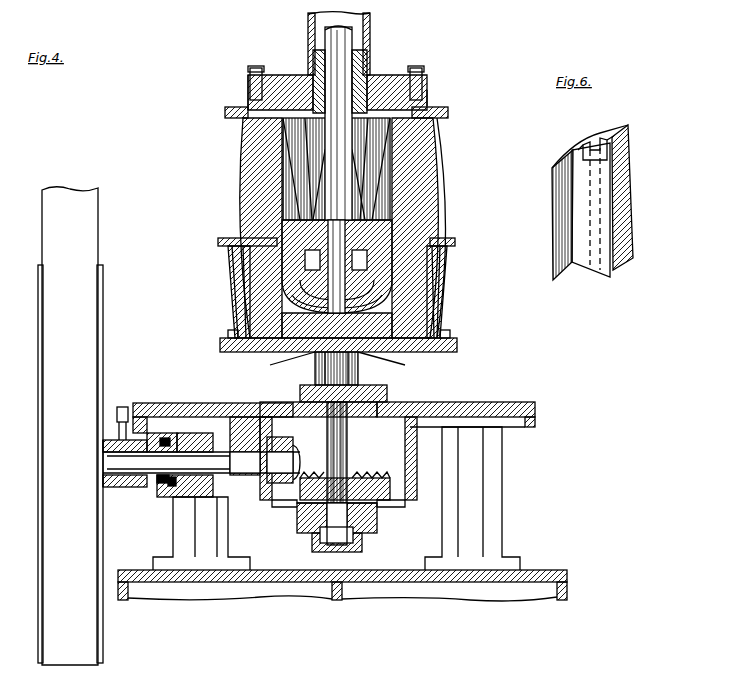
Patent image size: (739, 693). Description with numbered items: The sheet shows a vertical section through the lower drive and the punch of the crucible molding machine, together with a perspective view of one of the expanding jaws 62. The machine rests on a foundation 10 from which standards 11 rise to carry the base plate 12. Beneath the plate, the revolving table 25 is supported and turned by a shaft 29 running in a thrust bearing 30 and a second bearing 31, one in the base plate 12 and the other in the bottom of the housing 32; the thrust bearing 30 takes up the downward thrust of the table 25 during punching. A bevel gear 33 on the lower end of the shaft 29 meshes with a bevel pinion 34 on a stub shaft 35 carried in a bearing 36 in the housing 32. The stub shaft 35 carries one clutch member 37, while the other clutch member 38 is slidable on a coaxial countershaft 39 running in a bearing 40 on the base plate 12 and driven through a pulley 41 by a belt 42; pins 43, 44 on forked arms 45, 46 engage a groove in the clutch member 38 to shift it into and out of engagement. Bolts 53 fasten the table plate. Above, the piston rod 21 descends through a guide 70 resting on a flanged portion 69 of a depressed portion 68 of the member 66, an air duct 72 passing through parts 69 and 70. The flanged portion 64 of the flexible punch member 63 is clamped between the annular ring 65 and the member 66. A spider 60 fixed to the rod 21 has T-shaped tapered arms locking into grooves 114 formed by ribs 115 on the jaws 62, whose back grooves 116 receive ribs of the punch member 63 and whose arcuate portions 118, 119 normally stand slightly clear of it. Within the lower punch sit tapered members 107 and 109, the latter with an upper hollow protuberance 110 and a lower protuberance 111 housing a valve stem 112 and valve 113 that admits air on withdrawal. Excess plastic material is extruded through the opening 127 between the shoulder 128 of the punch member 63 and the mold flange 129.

In FIG. 4, the foundation 10 is at (402, 584).
In FIG. 4, the standards 11 is at (230, 537).
In FIG. 4, the base plate 12 is at (535, 420).
In FIG. 4, the piston rod 21 is at (346, 40).
In FIG. 4, the revolving table 25 is at (430, 352).
In FIG. 4, the shaft 29 is at (347, 443).
In FIG. 4, the thrust bearing 30 is at (387, 394).
In FIG. 4, the bearing 31 is at (353, 540).
In FIG. 4, the housing 32 is at (403, 505).
In FIG. 4, the bevel gear 33 is at (312, 548).
In FIG. 4, the bevel pinion 34 is at (293, 532).
In FIG. 4, the stub shaft 35 is at (240, 417).
In FIG. 4, the bearing 36 is at (270, 437).
In FIG. 4, the clutch member 37 is at (205, 403).
In FIG. 4, the clutch member 38 is at (190, 433).
In FIG. 4, the countershaft 39 is at (125, 407).
In FIG. 4, the bearing 40 is at (118, 487).
In FIG. 4, the driving pulley 41 is at (103, 325).
In FIG. 4, the belt 42 is at (88, 251).
In FIG. 4, the pin 43 is at (160, 433).
In FIG. 4, the pin 44 is at (160, 483).
In FIG. 4, the forked arm 45 is at (167, 438).
In FIG. 4, the forked arm 46 is at (172, 486).
In FIG. 4, the bolts 53 is at (228, 334).
In FIG. 4, the spider 60 is at (240, 137).
In FIG. 6, the jaws 62 is at (597, 198).
In FIG. 4, the punch member 63 is at (448, 177).
In FIG. 4, the flanged portion 64 is at (248, 80).
In FIG. 4, the annular ring 65 is at (240, 112).
In FIG. 4, the member 66 is at (256, 66).
In FIG. 4, the depressed portion 68 is at (300, 80).
In FIG. 4, the flanged portion 69 is at (310, 65).
In FIG. 4, the guide 70 is at (367, 62).
In FIG. 4, the air duct 72 is at (375, 105).
In FIG. 4, the tapered member 107 is at (437, 217).
In FIG. 4, the tapered member 109 is at (430, 273).
In FIG. 4, the hollow protuberance 110 is at (240, 240).
In FIG. 4, the hollow protuberance 111 is at (410, 302).
In FIG. 4, the valve stem 112 is at (238, 285).
In FIG. 4, the valve 113 is at (290, 362).
In FIG. 6, the grooves 114 is at (585, 148).
In FIG. 6, the ribs 115 is at (592, 140).
In FIG. 6, the grooves 116 is at (585, 272).
In FIG. 6, the arcuate portion 118 is at (553, 230).
In FIG. 6, the arcuate portion 119 is at (633, 160).
In FIG. 4, the opening 127 is at (428, 100).
In FIG. 4, the shoulder 128 is at (422, 84).
In FIG. 4, the flange 129 is at (448, 112).